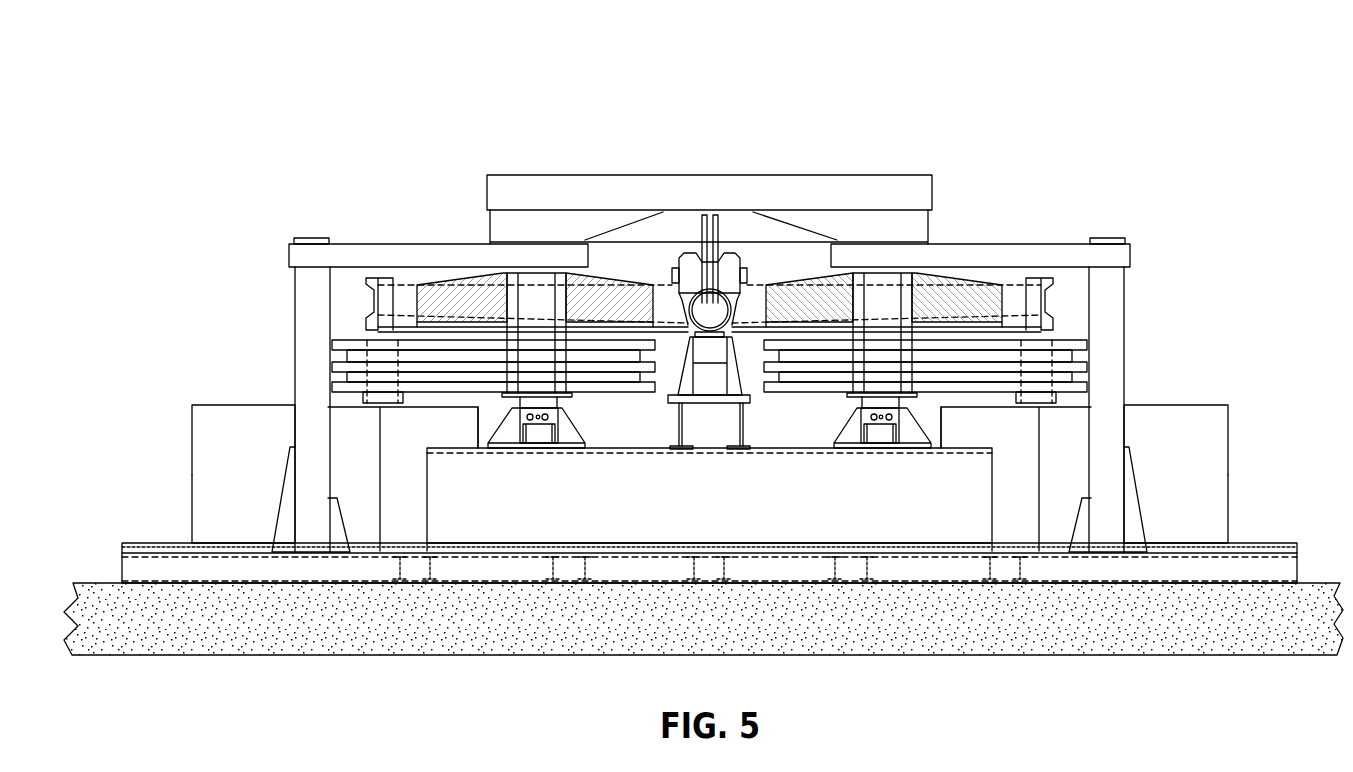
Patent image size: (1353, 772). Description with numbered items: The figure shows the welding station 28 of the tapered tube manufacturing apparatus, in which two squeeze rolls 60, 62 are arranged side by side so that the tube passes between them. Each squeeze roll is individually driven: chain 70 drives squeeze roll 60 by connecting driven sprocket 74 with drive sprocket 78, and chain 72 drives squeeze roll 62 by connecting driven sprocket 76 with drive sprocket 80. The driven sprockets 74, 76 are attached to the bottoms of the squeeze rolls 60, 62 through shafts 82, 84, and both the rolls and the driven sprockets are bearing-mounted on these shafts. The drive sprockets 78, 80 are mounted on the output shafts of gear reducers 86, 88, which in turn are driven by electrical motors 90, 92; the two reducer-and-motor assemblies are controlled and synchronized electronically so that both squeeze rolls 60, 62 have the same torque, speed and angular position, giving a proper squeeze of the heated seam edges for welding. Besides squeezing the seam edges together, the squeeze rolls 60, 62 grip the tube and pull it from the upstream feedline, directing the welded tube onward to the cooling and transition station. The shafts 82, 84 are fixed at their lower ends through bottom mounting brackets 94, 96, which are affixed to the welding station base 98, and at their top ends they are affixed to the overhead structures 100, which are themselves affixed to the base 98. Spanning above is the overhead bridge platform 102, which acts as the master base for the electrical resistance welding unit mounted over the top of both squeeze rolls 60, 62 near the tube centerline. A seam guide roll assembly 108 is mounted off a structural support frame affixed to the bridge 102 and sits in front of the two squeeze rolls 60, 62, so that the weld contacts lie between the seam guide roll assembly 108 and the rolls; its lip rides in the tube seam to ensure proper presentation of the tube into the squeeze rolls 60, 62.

The welding station 28 is at (602, 100).
The squeeze roll 60 is at (813, 293).
The squeeze roll 62 is at (458, 300).
The chain 70 is at (1025, 355).
The chain 72 is at (387, 379).
The driven sprocket 74 is at (802, 377).
The driven sprocket 76 is at (488, 377).
The drive sprocket 78 is at (1040, 377).
The drive sprocket 80 is at (372, 378).
The shaft 82 is at (882, 300).
The shaft 84 is at (543, 300).
The gear reducer 86 is at (1148, 419).
The gear reducer 88 is at (218, 440).
The electrical motor 90 is at (1204, 503).
The electrical motor 92 is at (218, 516).
The bottom mounting bracket 94 is at (886, 438).
The bottom mounting bracket 96 is at (538, 447).
The welding station base 98 is at (680, 506).
The overhead structure 100 is at (350, 252).
The overhead bridge platform 102 is at (763, 188).
The seam guide roll assembly 108 is at (692, 253).